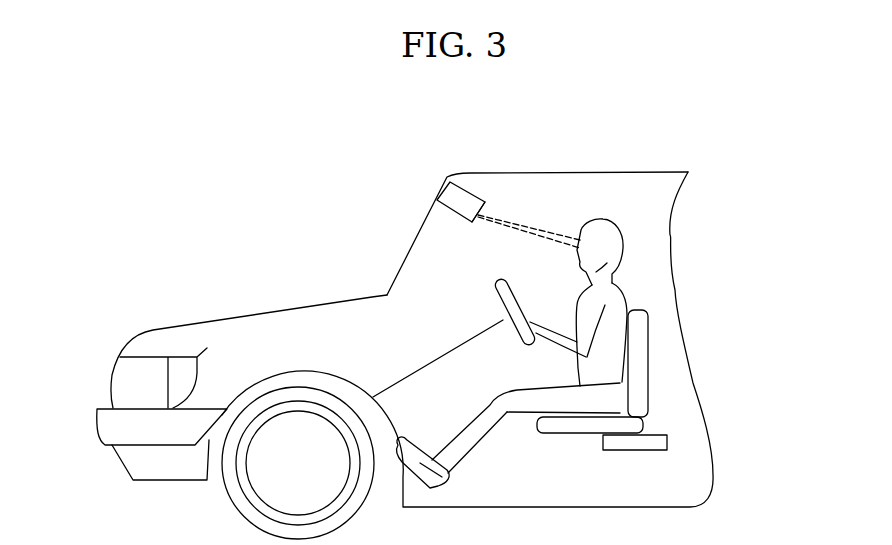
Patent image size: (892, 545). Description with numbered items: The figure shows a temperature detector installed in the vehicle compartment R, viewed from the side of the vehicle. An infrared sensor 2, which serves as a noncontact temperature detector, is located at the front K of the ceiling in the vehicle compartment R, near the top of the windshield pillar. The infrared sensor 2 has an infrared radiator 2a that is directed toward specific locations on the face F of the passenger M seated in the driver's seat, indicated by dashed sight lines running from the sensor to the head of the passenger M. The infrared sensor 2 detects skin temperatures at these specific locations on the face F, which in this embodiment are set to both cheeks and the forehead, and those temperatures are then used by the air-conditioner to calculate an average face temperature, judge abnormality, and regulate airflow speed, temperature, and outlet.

The infrared sensor 2 is at (453, 205).
The infrared radiator 2a is at (480, 222).
The front of the ceiling K is at (447, 177).
The face F is at (580, 238).
The vehicle compartment R is at (628, 195).
The passenger M is at (613, 315).